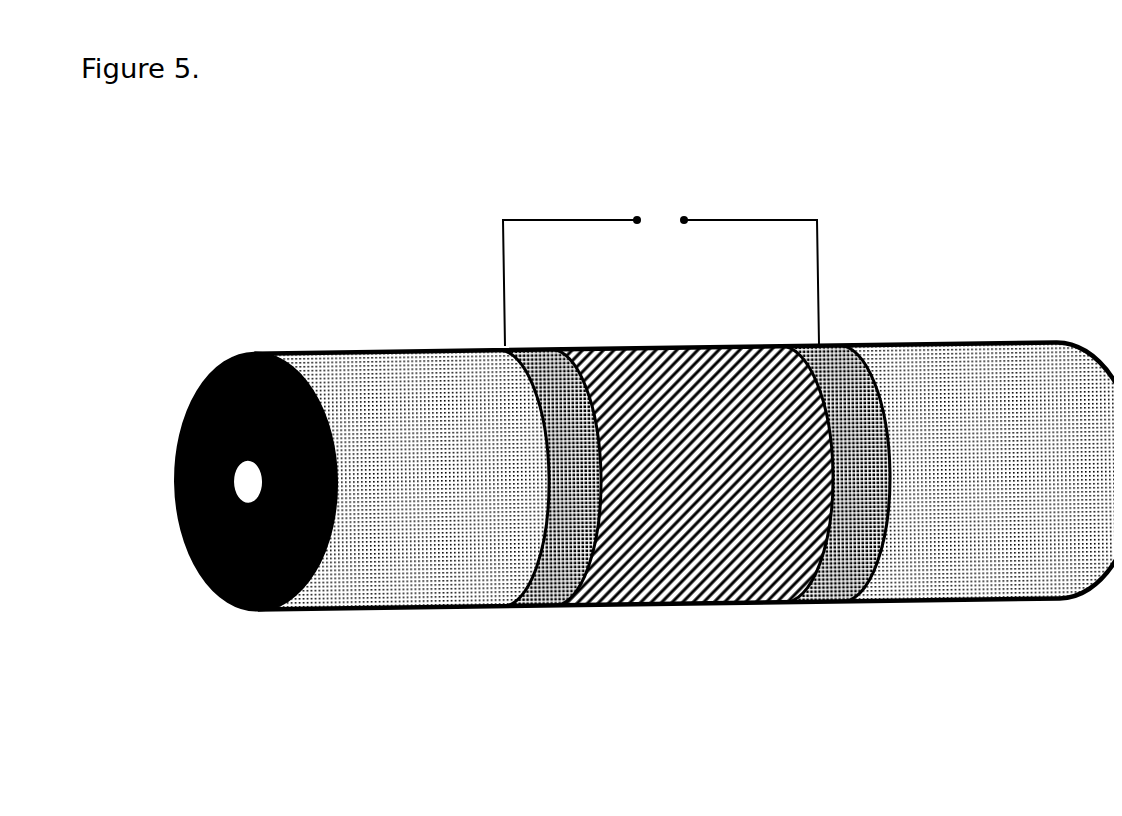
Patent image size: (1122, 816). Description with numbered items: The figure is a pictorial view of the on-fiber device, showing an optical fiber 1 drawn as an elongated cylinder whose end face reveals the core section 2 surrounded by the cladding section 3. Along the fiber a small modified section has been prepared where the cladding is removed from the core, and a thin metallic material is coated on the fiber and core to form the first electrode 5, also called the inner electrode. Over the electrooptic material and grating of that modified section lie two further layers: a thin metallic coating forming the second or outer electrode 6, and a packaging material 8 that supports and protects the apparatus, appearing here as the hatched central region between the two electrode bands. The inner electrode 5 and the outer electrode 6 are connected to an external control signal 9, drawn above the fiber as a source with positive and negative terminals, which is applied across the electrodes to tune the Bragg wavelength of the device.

The optical fiber 1 is at (644, 475).
The core section 2 is at (248, 482).
The cladding section 3 is at (402, 480).
The first electrode 5 is at (836, 473).
The second electrode 6 is at (551, 477).
The packaging material 8 is at (693, 476).
The external control signal 9 is at (650, 178).